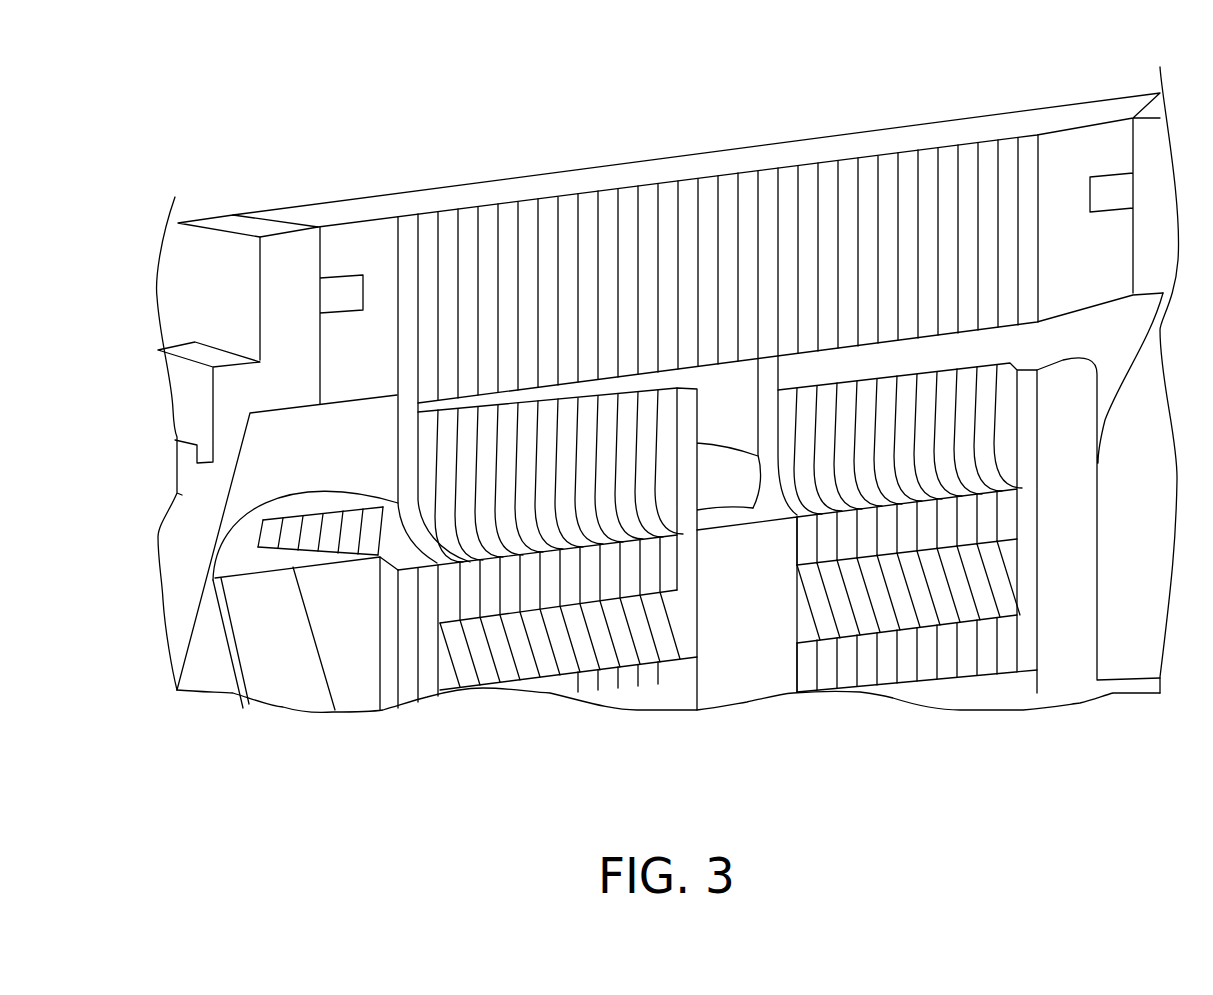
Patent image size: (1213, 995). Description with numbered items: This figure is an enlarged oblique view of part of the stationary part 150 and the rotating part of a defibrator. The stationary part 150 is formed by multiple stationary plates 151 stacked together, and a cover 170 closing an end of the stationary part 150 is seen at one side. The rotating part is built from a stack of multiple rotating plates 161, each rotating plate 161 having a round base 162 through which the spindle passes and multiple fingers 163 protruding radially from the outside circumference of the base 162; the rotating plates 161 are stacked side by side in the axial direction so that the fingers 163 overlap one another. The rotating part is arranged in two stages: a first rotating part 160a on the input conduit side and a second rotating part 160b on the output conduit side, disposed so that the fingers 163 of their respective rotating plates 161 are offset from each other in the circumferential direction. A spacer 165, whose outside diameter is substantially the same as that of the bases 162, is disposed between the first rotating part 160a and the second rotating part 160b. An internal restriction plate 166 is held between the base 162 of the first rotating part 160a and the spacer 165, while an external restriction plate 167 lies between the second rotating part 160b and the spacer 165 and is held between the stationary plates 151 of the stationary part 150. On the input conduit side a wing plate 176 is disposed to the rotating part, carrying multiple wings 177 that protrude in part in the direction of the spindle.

The stationary part 150 is at (547, 192).
The stationary plate 151 is at (727, 187).
The first rotating part 160a is at (616, 694).
The second rotating part 160b is at (952, 675).
The rotating plate 161 is at (845, 667).
The base 162 is at (507, 593).
The finger 163 is at (903, 404).
The spacer 165 is at (747, 667).
The internal restriction plate 166 is at (687, 449).
The external restriction plate 167 is at (412, 470).
The cover 170 is at (222, 282).
The wing plate 176 is at (360, 603).
The wing 177 is at (250, 628).